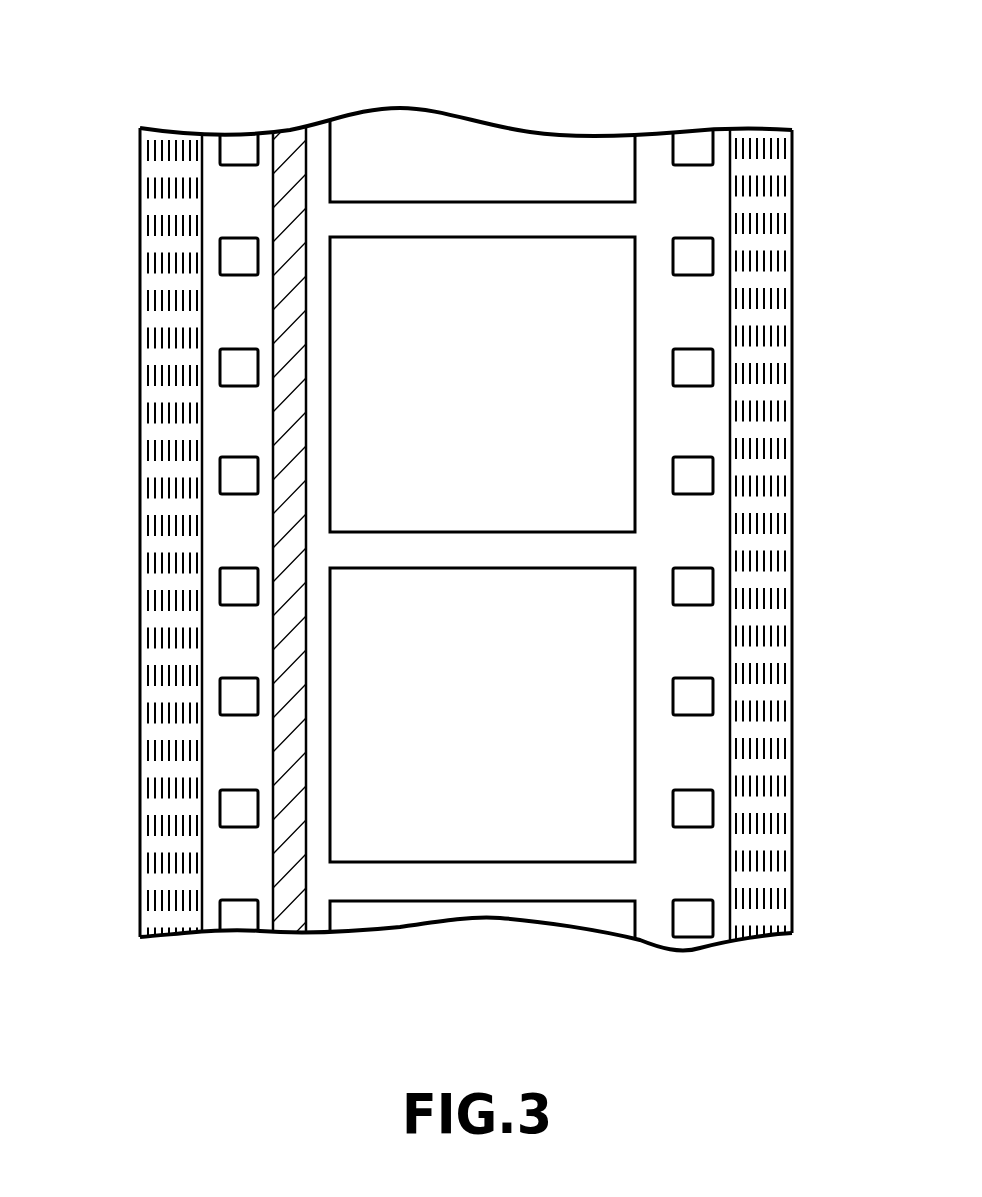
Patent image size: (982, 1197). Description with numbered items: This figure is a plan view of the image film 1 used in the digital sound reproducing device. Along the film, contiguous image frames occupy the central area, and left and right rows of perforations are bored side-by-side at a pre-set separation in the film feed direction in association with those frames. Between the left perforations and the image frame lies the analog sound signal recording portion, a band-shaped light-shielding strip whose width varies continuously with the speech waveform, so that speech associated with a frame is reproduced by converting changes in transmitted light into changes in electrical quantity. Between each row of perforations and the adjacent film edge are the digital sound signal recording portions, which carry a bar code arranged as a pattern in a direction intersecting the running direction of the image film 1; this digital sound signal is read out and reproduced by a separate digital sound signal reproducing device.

The image film 1 is at (720, 103).